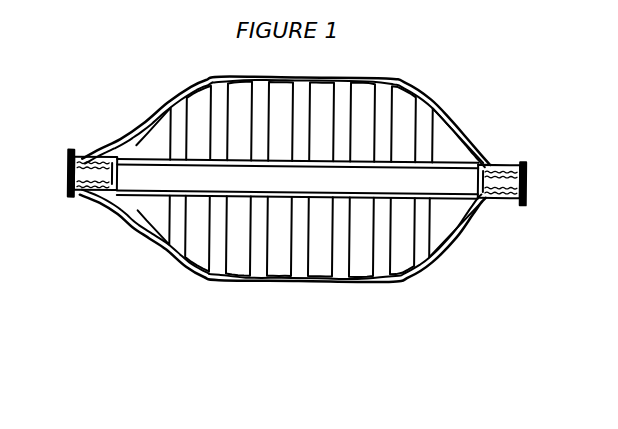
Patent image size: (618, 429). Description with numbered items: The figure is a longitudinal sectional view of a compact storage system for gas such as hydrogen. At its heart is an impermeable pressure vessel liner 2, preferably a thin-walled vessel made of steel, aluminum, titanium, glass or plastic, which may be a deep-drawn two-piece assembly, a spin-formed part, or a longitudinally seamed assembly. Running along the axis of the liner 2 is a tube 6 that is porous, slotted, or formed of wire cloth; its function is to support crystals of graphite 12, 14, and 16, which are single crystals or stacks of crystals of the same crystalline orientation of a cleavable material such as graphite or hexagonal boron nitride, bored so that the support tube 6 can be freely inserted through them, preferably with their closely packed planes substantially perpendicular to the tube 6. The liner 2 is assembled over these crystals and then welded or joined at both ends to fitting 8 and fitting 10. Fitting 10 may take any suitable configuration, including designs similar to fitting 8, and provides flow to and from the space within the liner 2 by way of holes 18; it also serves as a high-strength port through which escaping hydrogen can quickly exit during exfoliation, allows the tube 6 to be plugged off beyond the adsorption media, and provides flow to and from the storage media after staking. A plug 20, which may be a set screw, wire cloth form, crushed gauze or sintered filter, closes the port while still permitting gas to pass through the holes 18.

The pressure vessel liner 2 is at (458, 122).
The tube 6 is at (150, 181).
The fitting 8 is at (69, 194).
The fitting 10 is at (528, 194).
The crystal of graphite 12 is at (146, 122).
The crystal of graphite 14 is at (204, 261).
The crystal of graphite 16 is at (243, 265).
The holes 18 is at (501, 161).
The plug 20 is at (481, 206).